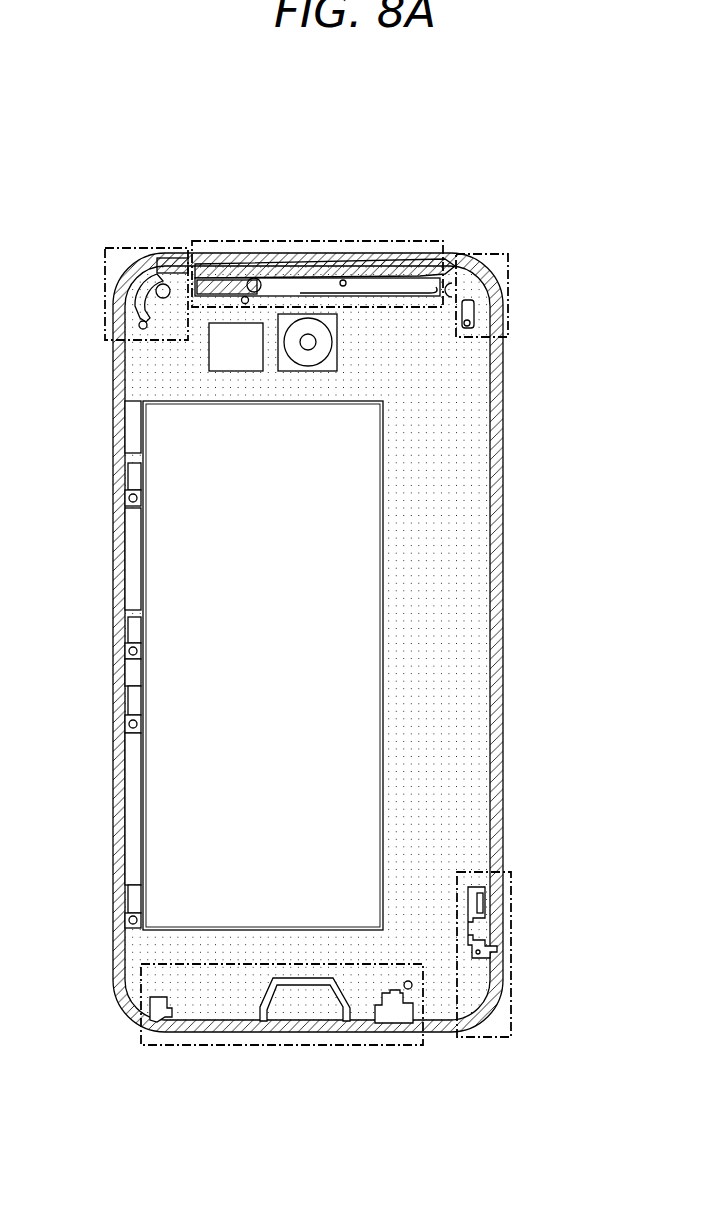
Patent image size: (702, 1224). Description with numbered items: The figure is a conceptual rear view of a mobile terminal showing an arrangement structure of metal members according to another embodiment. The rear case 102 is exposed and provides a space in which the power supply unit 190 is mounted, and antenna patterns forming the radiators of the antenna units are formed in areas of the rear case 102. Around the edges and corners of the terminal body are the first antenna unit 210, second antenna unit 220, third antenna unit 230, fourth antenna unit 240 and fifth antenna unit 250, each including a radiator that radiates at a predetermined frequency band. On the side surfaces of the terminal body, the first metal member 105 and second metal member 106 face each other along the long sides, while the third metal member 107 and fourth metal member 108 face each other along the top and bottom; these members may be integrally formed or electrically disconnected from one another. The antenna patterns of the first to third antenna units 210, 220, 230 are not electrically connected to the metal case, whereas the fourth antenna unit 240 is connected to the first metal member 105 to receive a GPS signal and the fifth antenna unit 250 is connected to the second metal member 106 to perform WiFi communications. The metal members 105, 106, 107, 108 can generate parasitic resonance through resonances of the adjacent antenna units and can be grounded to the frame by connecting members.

The rear case 102 is at (463, 623).
The first metal member 105 is at (120, 471).
The second metal member 106 is at (499, 466).
The third metal member 107 is at (355, 265).
The fourth metal member 108 is at (368, 1025).
The power supply unit 190 is at (193, 569).
The first antenna unit 210 is at (286, 1047).
The second antenna unit 220 is at (491, 1040).
The third antenna unit 230 is at (282, 240).
The fourth antenna unit 240 is at (128, 246).
The fifth antenna unit 250 is at (488, 253).